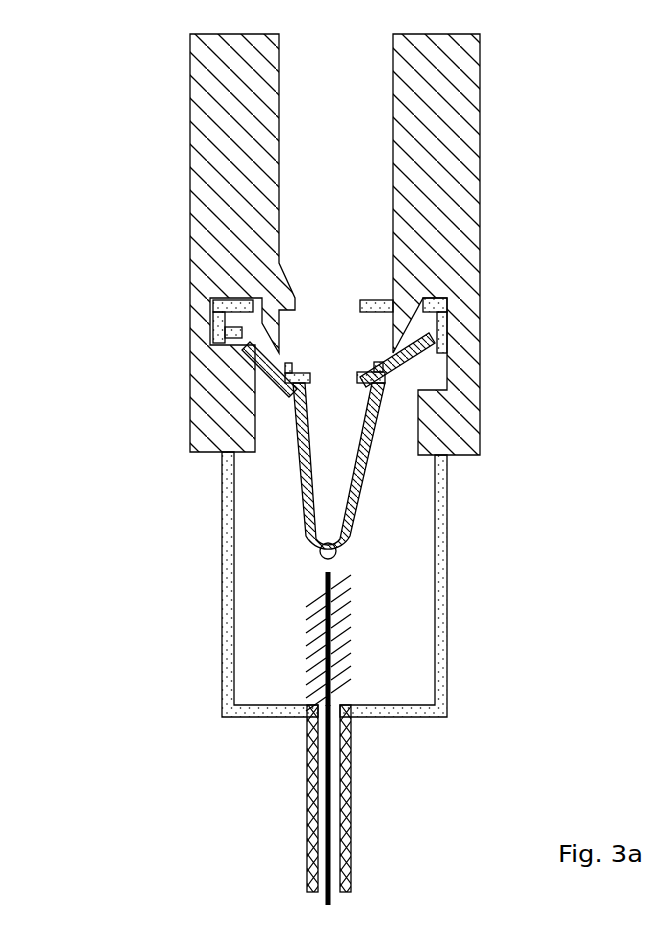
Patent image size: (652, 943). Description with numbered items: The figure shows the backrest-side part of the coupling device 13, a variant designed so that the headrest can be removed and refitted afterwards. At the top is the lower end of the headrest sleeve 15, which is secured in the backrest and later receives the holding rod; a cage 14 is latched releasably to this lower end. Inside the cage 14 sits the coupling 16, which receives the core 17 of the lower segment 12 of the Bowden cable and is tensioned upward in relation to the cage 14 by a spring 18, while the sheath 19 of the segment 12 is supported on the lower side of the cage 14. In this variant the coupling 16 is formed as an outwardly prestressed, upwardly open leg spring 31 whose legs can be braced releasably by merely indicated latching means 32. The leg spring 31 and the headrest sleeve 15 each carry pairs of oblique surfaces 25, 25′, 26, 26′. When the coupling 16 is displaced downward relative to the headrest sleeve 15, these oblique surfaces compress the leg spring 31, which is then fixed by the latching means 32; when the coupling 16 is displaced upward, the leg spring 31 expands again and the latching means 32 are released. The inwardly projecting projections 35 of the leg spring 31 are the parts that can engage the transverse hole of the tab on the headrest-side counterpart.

The headrest sleeve 15 is at (228, 177).
The latching means 32 is at (332, 358).
The oblique surface 26′ is at (434, 317).
The oblique surface 26 is at (423, 365).
The oblique surface 25 is at (406, 387).
The oblique surface 25′ is at (407, 342).
The leg spring 31 is at (300, 467).
The coupling 16 is at (372, 543).
The projections 35 is at (367, 382).
The coupling device 13 is at (319, 584).
The cage 14 is at (447, 680).
The spring 18 is at (343, 606).
The lower segment 12 is at (425, 805).
The sheath 19 is at (347, 846).
The core 17 is at (333, 761).